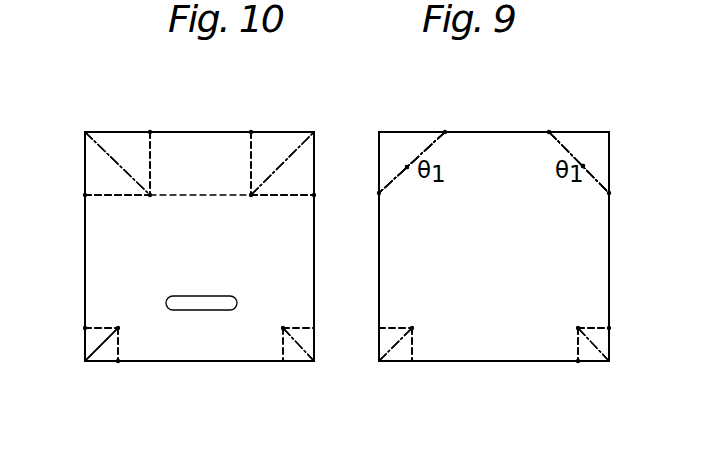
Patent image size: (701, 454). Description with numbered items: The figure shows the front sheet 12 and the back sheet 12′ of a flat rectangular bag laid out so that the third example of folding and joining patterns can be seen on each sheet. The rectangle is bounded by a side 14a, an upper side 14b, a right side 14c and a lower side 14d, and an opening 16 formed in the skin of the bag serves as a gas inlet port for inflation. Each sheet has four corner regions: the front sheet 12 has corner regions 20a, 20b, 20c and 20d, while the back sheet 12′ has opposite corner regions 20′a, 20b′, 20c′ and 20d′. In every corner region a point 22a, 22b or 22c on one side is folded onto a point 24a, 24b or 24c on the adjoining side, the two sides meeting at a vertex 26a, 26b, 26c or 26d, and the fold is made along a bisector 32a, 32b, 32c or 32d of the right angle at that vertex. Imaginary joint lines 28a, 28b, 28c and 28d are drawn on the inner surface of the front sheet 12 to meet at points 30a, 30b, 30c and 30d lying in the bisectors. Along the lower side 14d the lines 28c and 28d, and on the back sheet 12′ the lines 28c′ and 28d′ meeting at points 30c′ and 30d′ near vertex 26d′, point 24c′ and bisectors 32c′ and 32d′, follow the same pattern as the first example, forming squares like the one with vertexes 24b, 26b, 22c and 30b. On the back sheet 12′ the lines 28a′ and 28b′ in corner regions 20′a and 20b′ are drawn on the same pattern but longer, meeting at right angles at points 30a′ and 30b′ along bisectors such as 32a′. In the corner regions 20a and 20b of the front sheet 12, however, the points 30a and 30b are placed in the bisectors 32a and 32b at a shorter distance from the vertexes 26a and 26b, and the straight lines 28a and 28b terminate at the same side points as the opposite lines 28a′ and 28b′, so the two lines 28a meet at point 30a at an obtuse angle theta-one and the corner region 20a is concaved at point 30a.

In FIG. 9, the front sheet 12 is at (499, 348).
In FIG. 10, the back sheet 12′ is at (212, 281).
In FIG. 10, the side 14a is at (315, 255).
In FIG. 9, the side 14a is at (380, 258).
In FIG. 10, the upper side 14b is at (200, 131).
In FIG. 9, the upper side 14b is at (495, 131).
In FIG. 10, the right side 14c is at (86, 263).
In FIG. 9, the right side 14c is at (608, 252).
In FIG. 10, the lower side 14d is at (170, 362).
In FIG. 9, the lower side 14d is at (497, 362).
In FIG. 10, the opening 16 is at (213, 300).
In FIG. 9, the corner region 20a is at (378, 152).
In FIG. 9, the corner region 20b is at (610, 158).
In FIG. 9, the corner region 20c is at (610, 345).
In FIG. 9, the corner region 20d is at (413, 327).
In FIG. 10, the corner region 20′a is at (315, 165).
In FIG. 10, the corner region 20b′ is at (152, 198).
In FIG. 10, the corner region 20c′ is at (86, 343).
In FIG. 10, the corner region 20d′ is at (315, 336).
In FIG. 10, the corner point 22a is at (315, 197).
In FIG. 9, the corner point 22a is at (381, 195).
In FIG. 10, the point 22b is at (84, 195).
In FIG. 9, the point 22b is at (610, 193).
In FIG. 10, the point 22c is at (84, 329).
In FIG. 9, the point 22c is at (610, 328).
In FIG. 10, the edge point 24a is at (251, 131).
In FIG. 9, the edge point 24a is at (445, 131).
In FIG. 10, the point 24b is at (150, 131).
In FIG. 9, the point 24b is at (549, 131).
In FIG. 9, the edge point 24c is at (578, 362).
In FIG. 10, the edge point 24c′ is at (118, 362).
In FIG. 10, the vertex 26a is at (313, 131).
In FIG. 9, the vertex 26a is at (379, 132).
In FIG. 10, the vertex 26b is at (85, 131).
In FIG. 9, the vertex 26b is at (610, 132).
In FIG. 10, the corner 26c is at (85, 362).
In FIG. 9, the corner 26c is at (610, 362).
In FIG. 9, the corner 26d is at (380, 362).
In FIG. 10, the corner 26d′ is at (314, 362).
In FIG. 9, the imaginary joint line 28a is at (434, 145).
In FIG. 9, the imaginary joint line 28b is at (554, 139).
In FIG. 9, the imaginary joint line 28c is at (575, 346).
In FIG. 9, the imaginary joint line 28d is at (395, 327).
In FIG. 10, the imaginary joint line 28a′ is at (250, 171).
In FIG. 10, the imaginary joint line 28b′ is at (151, 155).
In FIG. 10, the imaginary joint line 28c′ is at (100, 327).
In FIG. 10, the imaginary joint line 28d′ is at (282, 345).
In FIG. 9, the point 30a is at (407, 166).
In FIG. 9, the point 30b is at (583, 165).
In FIG. 9, the fold point 30c is at (577, 327).
In FIG. 9, the fold point 30d is at (414, 328).
In FIG. 10, the fold point 30a′ is at (251, 198).
In FIG. 10, the fold point 30b′ is at (152, 196).
In FIG. 10, the fold point 30c′ is at (119, 328).
In FIG. 10, the fold point 30d′ is at (283, 328).
In FIG. 9, the bisector 32a is at (407, 166).
In FIG. 10, the bisector 32b is at (111, 158).
In FIG. 9, the bisector 32b is at (585, 165).
In FIG. 9, the corner flap 32c is at (592, 362).
In FIG. 9, the corner flap 32d is at (398, 362).
In FIG. 10, the bisector 32a′ is at (282, 163).
In FIG. 10, the corner flap 32c′ is at (100, 362).
In FIG. 10, the corner flap 32d′ is at (288, 362).